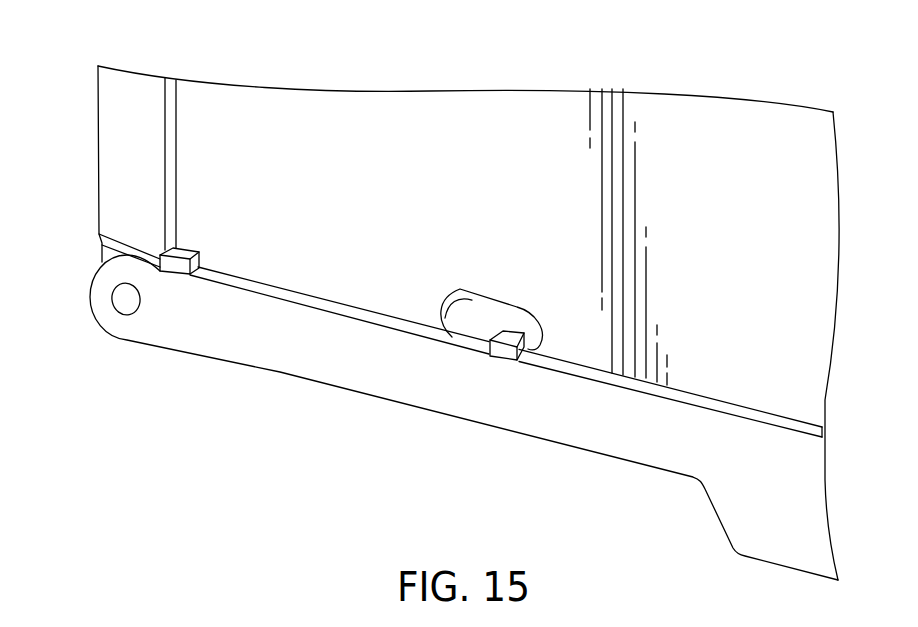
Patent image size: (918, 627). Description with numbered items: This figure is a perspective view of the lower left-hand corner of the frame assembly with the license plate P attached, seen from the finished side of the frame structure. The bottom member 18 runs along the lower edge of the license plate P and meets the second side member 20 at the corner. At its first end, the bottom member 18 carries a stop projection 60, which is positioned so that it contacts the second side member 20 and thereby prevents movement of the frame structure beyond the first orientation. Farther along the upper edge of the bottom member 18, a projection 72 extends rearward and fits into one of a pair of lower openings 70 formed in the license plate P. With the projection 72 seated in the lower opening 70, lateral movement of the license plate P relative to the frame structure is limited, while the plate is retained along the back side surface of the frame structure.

The license plate P is at (427, 165).
The second side member 20 is at (130, 140).
The bottom member 18 is at (320, 350).
The stop projection 60 is at (175, 267).
The lower openings 70 is at (472, 310).
The projection 72 is at (503, 350).